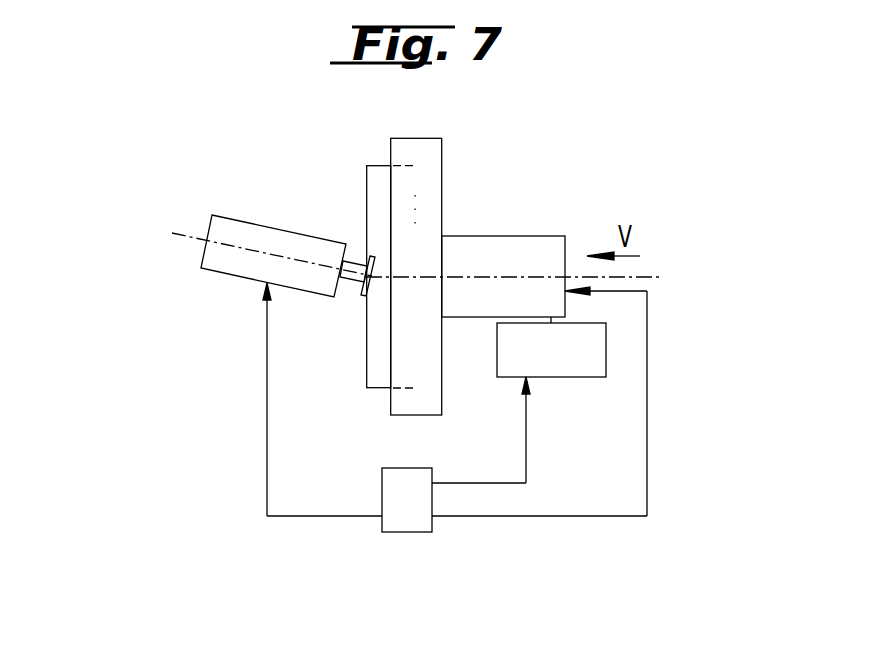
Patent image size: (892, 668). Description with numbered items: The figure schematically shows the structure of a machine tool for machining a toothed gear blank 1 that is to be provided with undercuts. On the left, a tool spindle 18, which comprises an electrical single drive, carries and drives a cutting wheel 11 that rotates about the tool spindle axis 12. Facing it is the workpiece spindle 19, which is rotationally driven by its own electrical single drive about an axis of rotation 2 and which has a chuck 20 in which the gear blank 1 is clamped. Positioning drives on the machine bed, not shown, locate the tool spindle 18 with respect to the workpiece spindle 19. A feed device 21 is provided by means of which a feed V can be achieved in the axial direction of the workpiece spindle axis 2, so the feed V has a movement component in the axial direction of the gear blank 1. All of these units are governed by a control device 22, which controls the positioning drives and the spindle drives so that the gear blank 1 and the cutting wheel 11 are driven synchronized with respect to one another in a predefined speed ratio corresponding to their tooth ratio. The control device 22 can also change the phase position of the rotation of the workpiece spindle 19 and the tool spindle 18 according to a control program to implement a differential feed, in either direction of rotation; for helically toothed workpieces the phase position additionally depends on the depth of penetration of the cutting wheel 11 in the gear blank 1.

The toothed gear blank 1 is at (364, 400).
The axis of rotation 2 is at (657, 277).
The cutting wheel 11 is at (365, 295).
The tool spindle axis 12 is at (190, 238).
The tool spindle 18 is at (270, 237).
The workpiece spindle 19 is at (510, 248).
The chuck 20 is at (410, 143).
The feed device 21 is at (589, 360).
The control device 22 is at (404, 519).